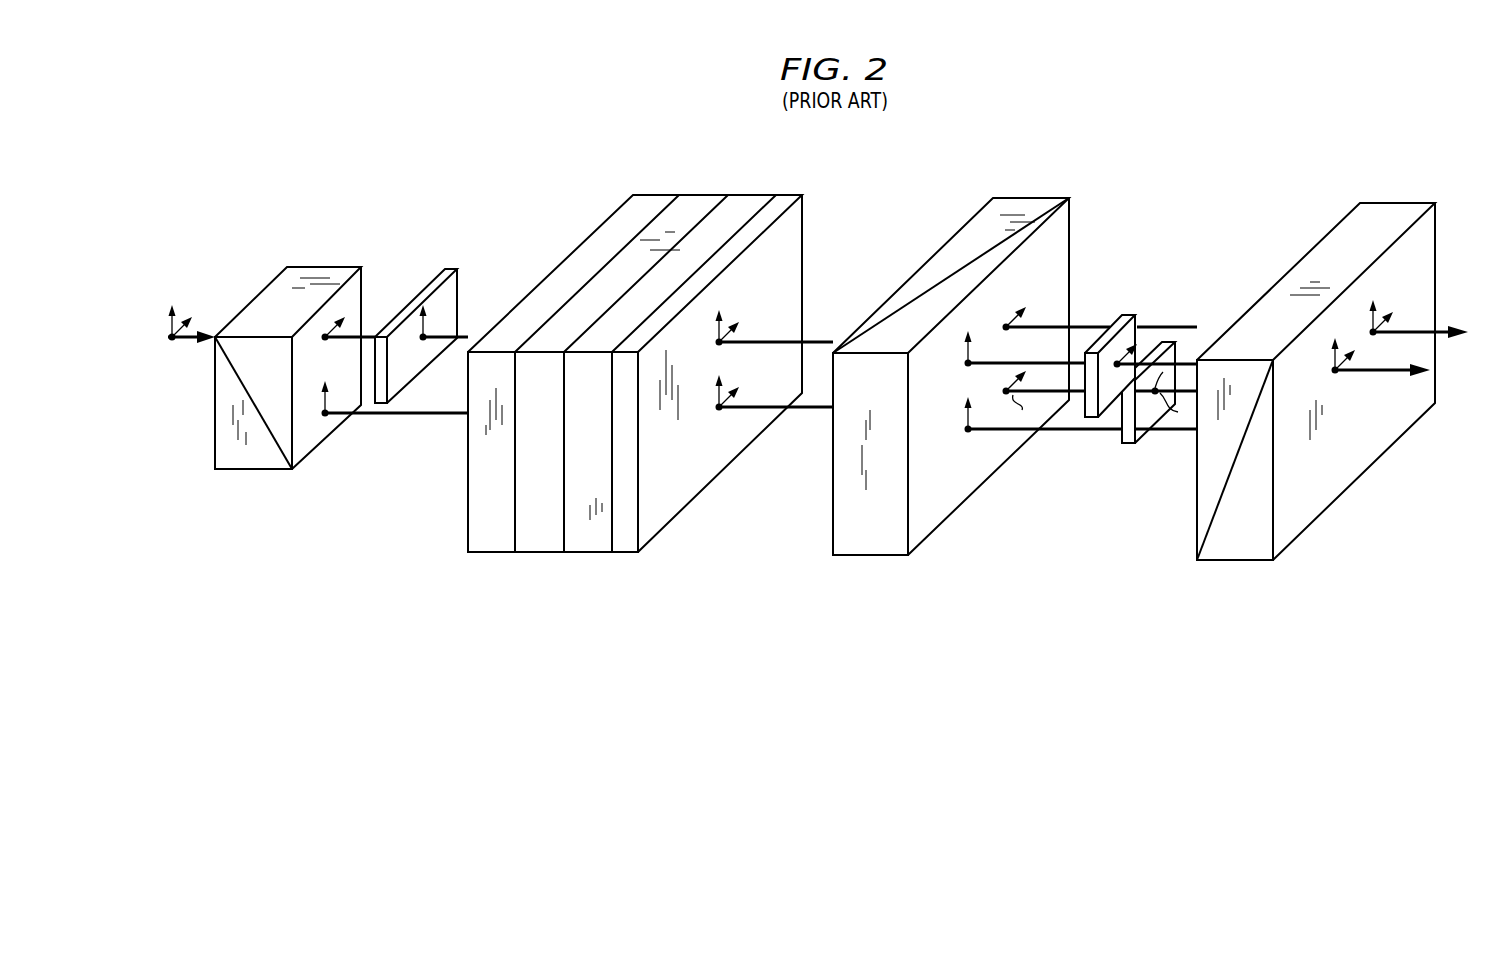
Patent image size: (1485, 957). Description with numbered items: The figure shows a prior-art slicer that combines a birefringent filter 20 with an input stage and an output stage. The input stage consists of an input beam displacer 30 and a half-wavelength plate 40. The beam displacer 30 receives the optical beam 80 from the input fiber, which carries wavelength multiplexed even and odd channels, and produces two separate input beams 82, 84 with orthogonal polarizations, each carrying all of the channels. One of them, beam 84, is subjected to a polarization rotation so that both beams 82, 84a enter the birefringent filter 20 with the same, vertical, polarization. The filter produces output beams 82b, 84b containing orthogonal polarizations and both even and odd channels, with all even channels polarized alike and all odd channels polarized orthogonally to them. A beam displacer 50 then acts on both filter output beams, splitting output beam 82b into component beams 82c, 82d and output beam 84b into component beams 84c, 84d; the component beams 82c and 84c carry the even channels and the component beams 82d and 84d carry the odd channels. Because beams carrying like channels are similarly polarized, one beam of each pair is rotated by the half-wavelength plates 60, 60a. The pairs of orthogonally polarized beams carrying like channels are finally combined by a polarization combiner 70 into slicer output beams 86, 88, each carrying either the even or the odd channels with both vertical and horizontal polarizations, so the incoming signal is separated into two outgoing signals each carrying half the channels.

The birefringent filter 20 is at (531, 554).
The input beam displacer 30 is at (245, 470).
The half-wavelength plate 40 is at (402, 370).
The beam displacer 50 is at (1036, 196).
The half-wavelength plate 60 is at (1121, 320).
The half-wavelength plate 60a is at (1148, 420).
The polarization combiner 70 is at (1283, 528).
The optical beam 80 is at (185, 340).
The input beam 82 is at (368, 416).
The output beam 82b is at (753, 409).
The component beam 82c is at (1007, 430).
The component beam 82d is at (1056, 393).
The input beam 84 is at (367, 337).
The input beam 84a is at (462, 338).
The output beam 84b is at (777, 342).
The component beam 84c is at (988, 364).
The component beam 84d is at (1084, 327).
The slicer output beam 86 is at (1390, 373).
The slicer output beam 88 is at (1432, 327).